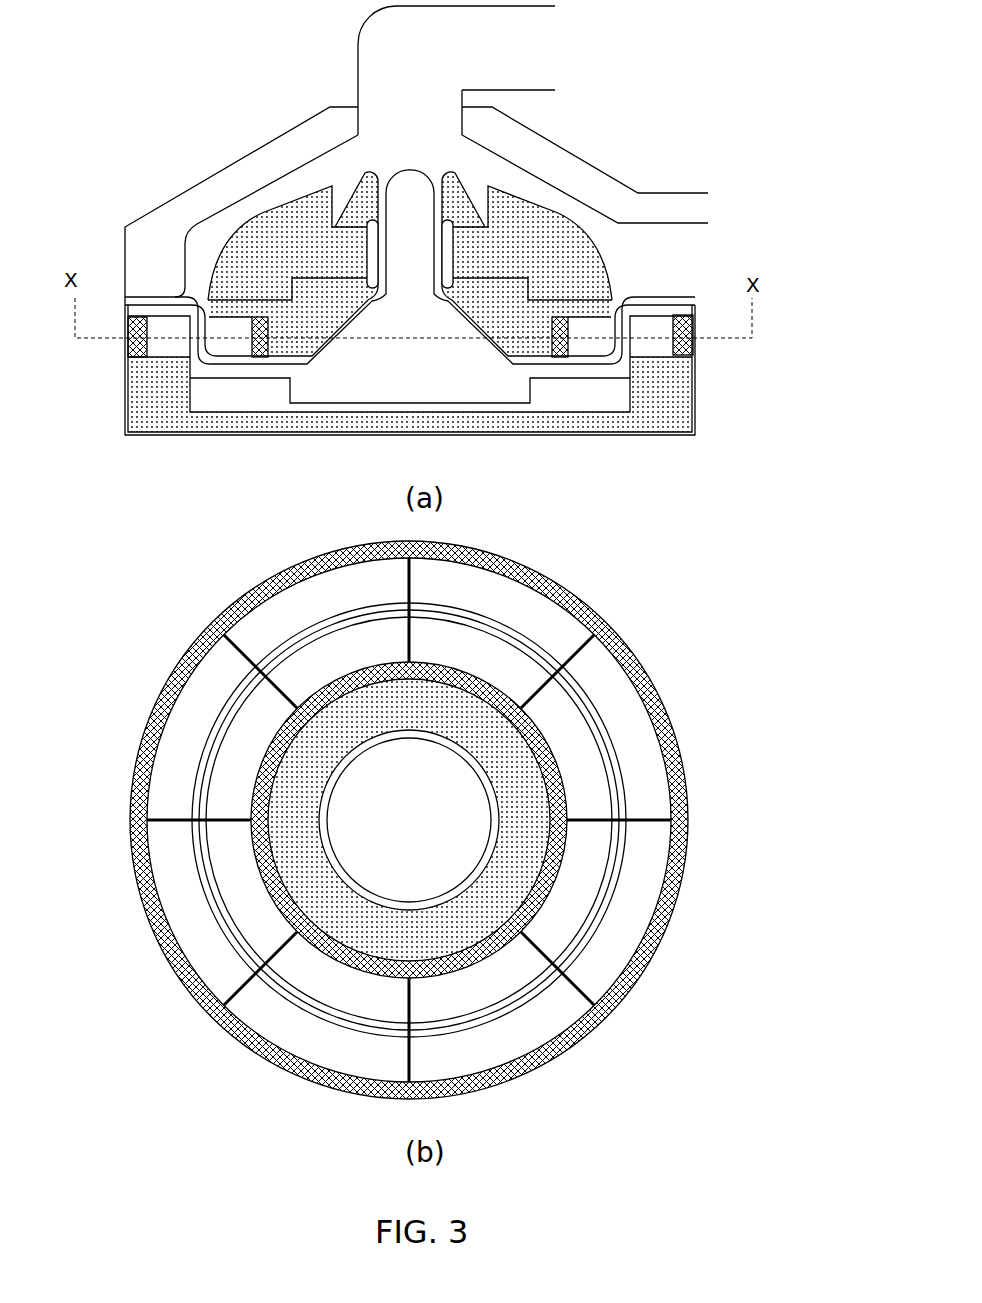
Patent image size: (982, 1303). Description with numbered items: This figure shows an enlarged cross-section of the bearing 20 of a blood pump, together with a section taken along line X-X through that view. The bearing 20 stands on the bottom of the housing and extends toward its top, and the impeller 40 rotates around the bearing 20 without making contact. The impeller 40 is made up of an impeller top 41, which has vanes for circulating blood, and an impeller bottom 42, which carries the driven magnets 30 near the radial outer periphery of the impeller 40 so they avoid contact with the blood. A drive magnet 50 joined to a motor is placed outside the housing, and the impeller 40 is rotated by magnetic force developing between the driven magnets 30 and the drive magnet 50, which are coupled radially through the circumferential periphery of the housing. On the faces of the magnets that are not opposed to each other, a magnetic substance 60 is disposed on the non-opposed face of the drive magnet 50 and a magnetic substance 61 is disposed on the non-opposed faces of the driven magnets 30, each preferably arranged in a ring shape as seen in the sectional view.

The bearing 20 is at (412, 197).
The driven magnets 30 is at (590, 320).
The impeller 40 is at (303, 184).
The impeller top 41 is at (298, 232).
The impeller bottom 42 is at (296, 321).
The drive magnet 50 is at (658, 332).
The magnetic substance 60 is at (697, 323).
The magnetic substance 61 is at (556, 336).